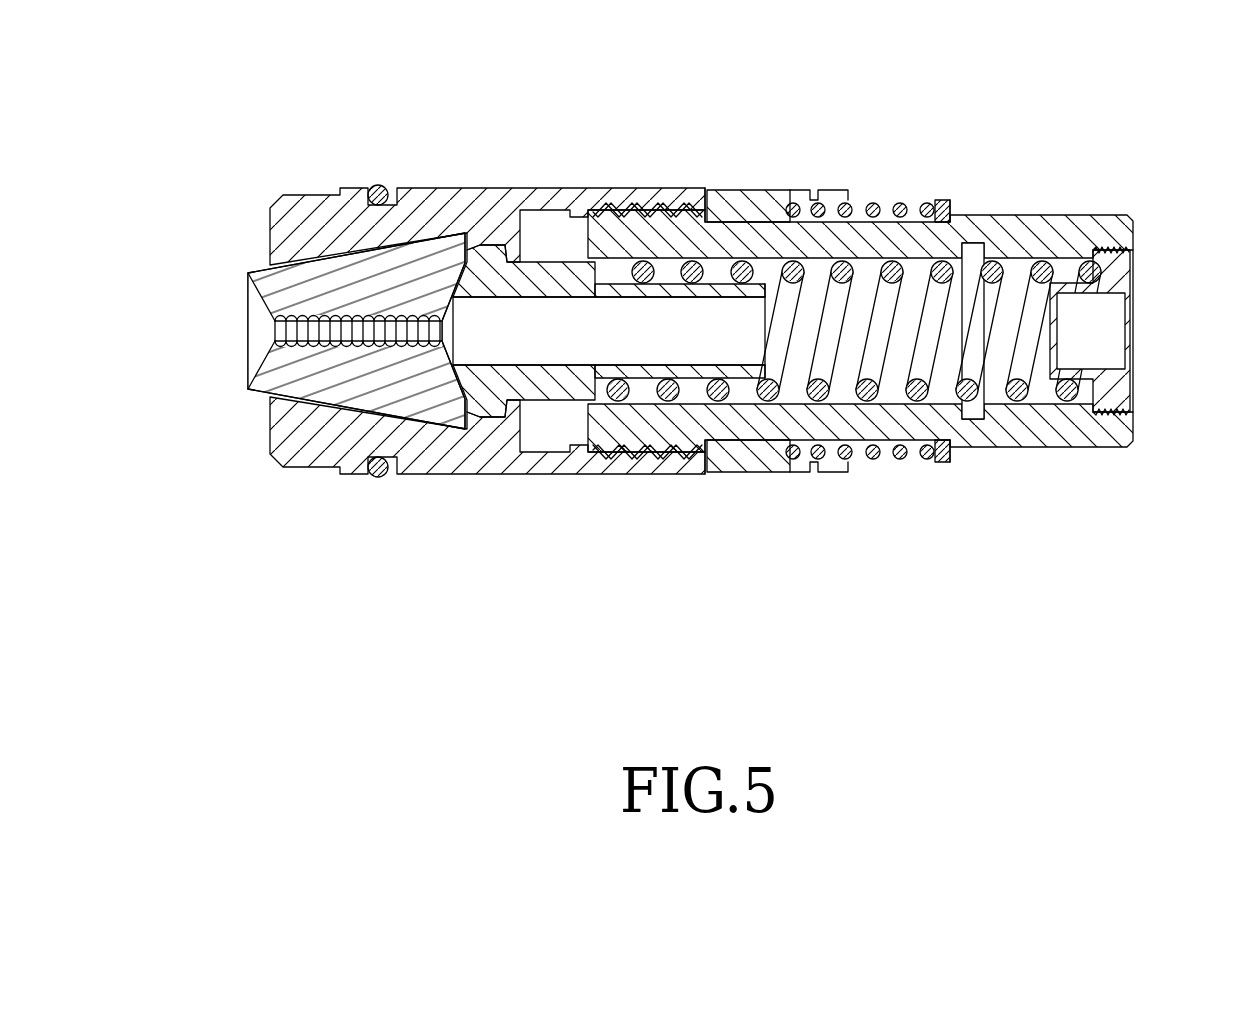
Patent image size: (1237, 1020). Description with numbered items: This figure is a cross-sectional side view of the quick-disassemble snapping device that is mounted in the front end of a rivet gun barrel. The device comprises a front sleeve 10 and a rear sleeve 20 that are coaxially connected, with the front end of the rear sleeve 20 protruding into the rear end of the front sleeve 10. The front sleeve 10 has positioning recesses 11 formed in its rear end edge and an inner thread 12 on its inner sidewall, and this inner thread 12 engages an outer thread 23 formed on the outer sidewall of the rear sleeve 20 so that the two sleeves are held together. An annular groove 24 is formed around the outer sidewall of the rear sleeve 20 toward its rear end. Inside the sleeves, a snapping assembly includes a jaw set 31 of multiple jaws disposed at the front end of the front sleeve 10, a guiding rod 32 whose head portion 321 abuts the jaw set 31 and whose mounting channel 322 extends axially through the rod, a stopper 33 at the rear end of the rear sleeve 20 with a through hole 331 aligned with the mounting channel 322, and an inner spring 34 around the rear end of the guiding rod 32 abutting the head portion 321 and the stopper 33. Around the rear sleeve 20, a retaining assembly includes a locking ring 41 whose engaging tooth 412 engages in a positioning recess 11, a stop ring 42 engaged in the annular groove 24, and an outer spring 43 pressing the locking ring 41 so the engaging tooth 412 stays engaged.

The front sleeve 10 is at (478, 195).
The positioning recesses 11 is at (713, 193).
The inner thread 12 is at (602, 197).
The rear sleeve 20 is at (860, 217).
The outer thread 23 is at (623, 197).
The annular groove 24 is at (948, 220).
The jaw set 31 is at (317, 387).
The guiding rod 32 is at (639, 394).
The head portion 321 is at (547, 388).
The mounting channel 322 is at (660, 350).
The stopper 33 is at (1136, 338).
The through hole 331 is at (1107, 293).
The inner spring 34 is at (975, 367).
The locking ring 41 is at (799, 316).
The engaging tooth 412 is at (740, 197).
The stop ring 42 is at (947, 213).
The outer spring 43 is at (900, 207).